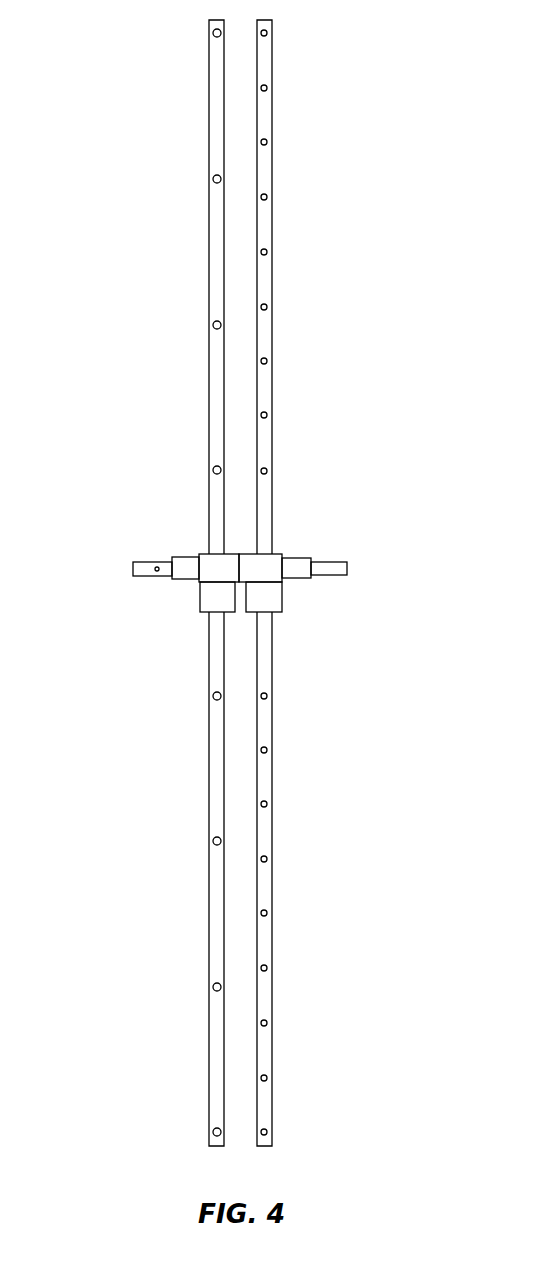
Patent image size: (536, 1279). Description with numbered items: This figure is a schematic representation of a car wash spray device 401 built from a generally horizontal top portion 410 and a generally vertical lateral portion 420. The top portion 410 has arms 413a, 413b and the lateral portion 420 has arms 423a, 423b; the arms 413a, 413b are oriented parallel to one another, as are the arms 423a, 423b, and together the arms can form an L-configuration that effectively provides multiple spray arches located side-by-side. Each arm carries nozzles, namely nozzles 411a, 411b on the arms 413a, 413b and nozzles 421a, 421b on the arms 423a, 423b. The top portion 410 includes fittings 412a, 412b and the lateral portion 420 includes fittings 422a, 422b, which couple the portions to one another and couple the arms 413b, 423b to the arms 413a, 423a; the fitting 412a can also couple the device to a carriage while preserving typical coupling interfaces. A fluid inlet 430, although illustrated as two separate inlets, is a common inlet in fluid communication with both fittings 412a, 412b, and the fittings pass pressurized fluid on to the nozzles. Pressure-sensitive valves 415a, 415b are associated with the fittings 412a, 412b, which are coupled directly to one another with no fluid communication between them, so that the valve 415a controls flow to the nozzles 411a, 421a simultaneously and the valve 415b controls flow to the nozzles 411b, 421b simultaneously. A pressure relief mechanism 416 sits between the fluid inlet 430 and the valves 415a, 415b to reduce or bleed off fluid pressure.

The car wash spray device 401 is at (160, 37).
The top portion 410 is at (310, 254).
The nozzle 411a is at (213, 179).
The nozzle 411b is at (268, 197).
The fitting 412a is at (207, 553).
The fitting 412b is at (278, 554).
The arm 413a is at (209, 383).
The arm 413b is at (272, 383).
The pressure-sensitive valve 415a is at (187, 556).
The pressure-sensitive valve 415b is at (300, 558).
The pressure relief mechanism 416 is at (155, 570).
The lateral portion 420 is at (309, 871).
The nozzle 421a is at (213, 987).
The nozzle 421b is at (268, 968).
The fitting 422a is at (200, 597).
The fitting 422b is at (282, 592).
The arm 423a is at (209, 770).
The arm 423b is at (272, 770).
The fluid inlet 430 is at (240, 592).